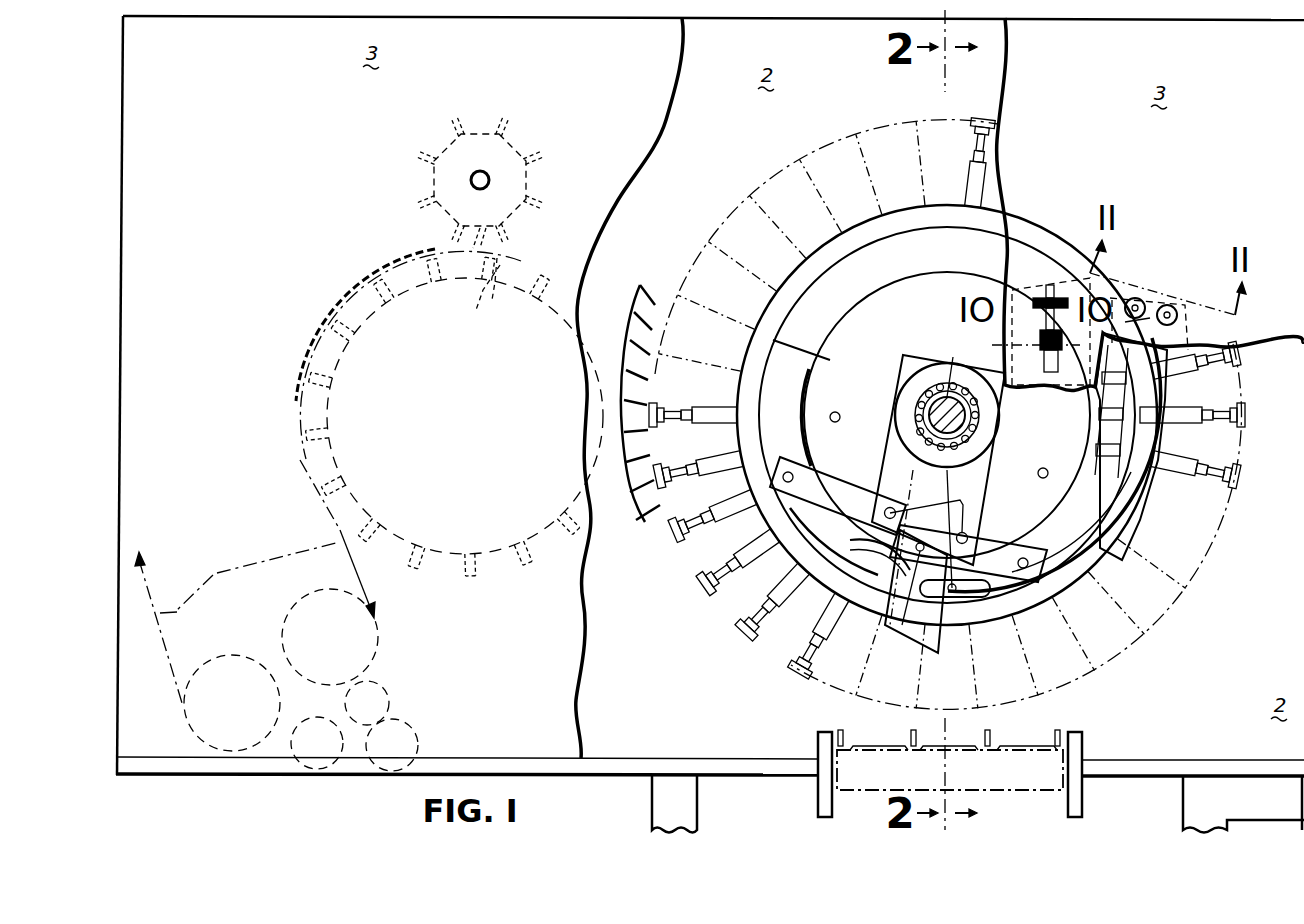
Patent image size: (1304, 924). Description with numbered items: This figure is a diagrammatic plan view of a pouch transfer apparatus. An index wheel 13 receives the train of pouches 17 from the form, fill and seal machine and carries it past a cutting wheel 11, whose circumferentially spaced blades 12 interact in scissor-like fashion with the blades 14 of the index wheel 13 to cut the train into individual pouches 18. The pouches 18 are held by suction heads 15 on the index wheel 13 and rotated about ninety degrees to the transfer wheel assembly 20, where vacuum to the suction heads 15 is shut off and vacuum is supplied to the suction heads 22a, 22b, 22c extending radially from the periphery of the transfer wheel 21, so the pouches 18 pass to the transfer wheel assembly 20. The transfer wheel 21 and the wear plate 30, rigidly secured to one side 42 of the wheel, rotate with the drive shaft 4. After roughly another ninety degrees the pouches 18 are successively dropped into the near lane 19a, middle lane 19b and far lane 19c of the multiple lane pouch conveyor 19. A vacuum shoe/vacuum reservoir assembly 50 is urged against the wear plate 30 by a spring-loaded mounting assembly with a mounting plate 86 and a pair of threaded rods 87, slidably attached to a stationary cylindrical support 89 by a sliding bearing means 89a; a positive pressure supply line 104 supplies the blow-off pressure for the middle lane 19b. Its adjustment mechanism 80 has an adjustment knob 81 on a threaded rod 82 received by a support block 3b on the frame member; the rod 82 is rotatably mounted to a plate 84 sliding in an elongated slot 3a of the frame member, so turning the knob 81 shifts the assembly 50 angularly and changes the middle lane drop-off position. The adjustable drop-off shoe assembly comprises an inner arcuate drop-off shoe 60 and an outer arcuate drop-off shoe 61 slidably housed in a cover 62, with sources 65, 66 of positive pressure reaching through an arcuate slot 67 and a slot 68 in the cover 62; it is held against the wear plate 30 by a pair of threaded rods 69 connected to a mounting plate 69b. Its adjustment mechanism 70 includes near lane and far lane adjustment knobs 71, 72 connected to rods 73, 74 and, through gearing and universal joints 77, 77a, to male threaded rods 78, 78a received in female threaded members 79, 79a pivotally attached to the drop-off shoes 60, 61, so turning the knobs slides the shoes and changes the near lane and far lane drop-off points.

The elongated slot 3a is at (1097, 446).
The support block 3b is at (1068, 292).
The drive shaft 4 is at (945, 393).
The cutting wheel 11 is at (533, 132).
The blades 12 is at (482, 221).
The index wheel 13 is at (499, 580).
The blades 14 is at (493, 299).
The suction heads 15 is at (626, 392).
The train of pouches 17 is at (255, 581).
The individual pouches 18 is at (626, 321).
The pouch conveyor 19 is at (808, 804).
The near lane 19a is at (879, 731).
The middle lane 19b is at (951, 731).
The far lane 19c is at (1027, 731).
The transfer wheel assembly 20 is at (985, 198).
The transfer wheel 21 is at (906, 228).
The suction heads 22a is at (705, 575).
The suction heads 22b is at (748, 635).
The suction heads 22c is at (800, 672).
The wear plate 30 is at (923, 264).
The side of the transfer wheel 42 is at (928, 228).
The vacuum shoe/vacuum reservoir assembly 50 is at (899, 282).
The inner arcuate drop-off shoe 60 is at (1079, 482).
The outer arcuate drop-off shoe 61 is at (1098, 500).
The cover 62 is at (1127, 517).
The source of positive pressure 65 is at (878, 566).
The source of positive pressure 66 is at (940, 600).
The arcuate slot 67 is at (845, 544).
The slot 68 is at (973, 609).
The threaded rods 69 is at (796, 478).
The mounting plate 69b is at (858, 495).
The adjustment mechanism 70 is at (1190, 275).
The near lane adjustment knob 71 is at (1142, 298).
The far lane adjustment knob 72 is at (1174, 306).
The rod 73 is at (1143, 329).
The rod 74 is at (1182, 317).
The universal joint 77 is at (1093, 416).
The male threaded rod 78 is at (1095, 424).
The female threaded member 79 is at (1094, 448).
The universal joint 77a is at (1160, 388).
The male threaded rod 78a is at (1155, 430).
The female threaded member 79a is at (1150, 478).
The adjustment mechanism 80 is at (1050, 258).
The adjustment knob 81 is at (1040, 302).
The threaded rod 82 is at (1038, 331).
The plate 84 is at (1010, 378).
The mounting plate 86 is at (912, 466).
The threaded rods 87 is at (937, 507).
The cylindrical support 89 is at (918, 412).
The sliding bearing means 89a is at (898, 416).
The positive pressure supply line 104 is at (899, 596).